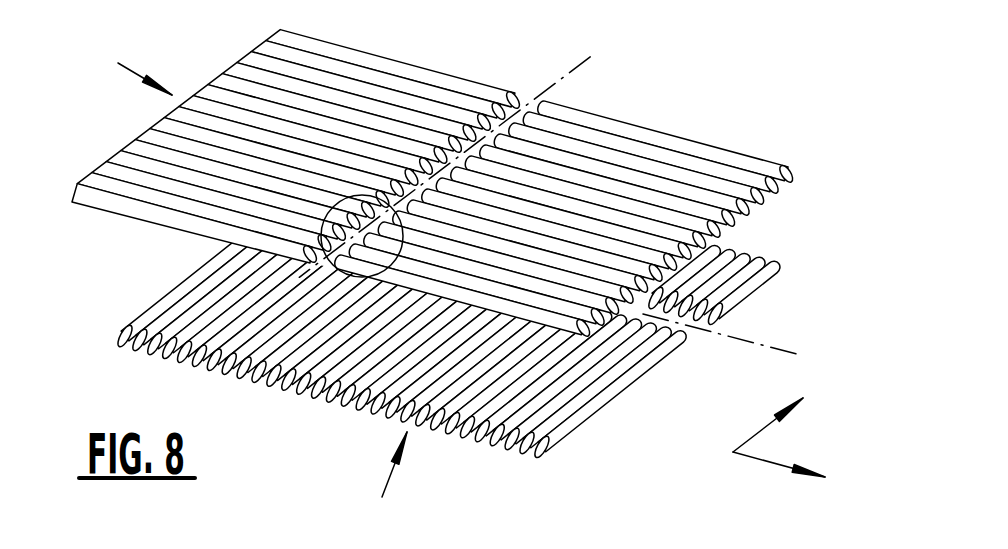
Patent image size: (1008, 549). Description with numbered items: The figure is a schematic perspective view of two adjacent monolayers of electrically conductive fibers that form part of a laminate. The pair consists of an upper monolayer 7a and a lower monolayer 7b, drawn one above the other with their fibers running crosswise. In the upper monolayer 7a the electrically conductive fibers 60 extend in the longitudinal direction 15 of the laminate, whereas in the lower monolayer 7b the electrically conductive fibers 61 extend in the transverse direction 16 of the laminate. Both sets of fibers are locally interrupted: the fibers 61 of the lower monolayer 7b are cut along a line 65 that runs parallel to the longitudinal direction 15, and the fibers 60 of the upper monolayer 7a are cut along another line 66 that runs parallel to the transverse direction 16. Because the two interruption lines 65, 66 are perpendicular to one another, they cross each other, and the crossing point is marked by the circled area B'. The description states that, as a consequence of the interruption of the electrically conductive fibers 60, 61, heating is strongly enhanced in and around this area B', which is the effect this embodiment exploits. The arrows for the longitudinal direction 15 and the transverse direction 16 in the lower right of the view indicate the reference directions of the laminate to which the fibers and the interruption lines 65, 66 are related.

The electrically conductive fibers 60 is at (397, 65).
The electrically conductive fibers 61 is at (228, 366).
The line 66 is at (573, 72).
The line 65 is at (787, 348).
The transverse direction 16 is at (753, 433).
The longitudinal direction 15 is at (755, 458).
The upper monolayer 7a is at (118, 63).
The lower monolayer 7b is at (382, 497).
The area B' is at (275, 236).